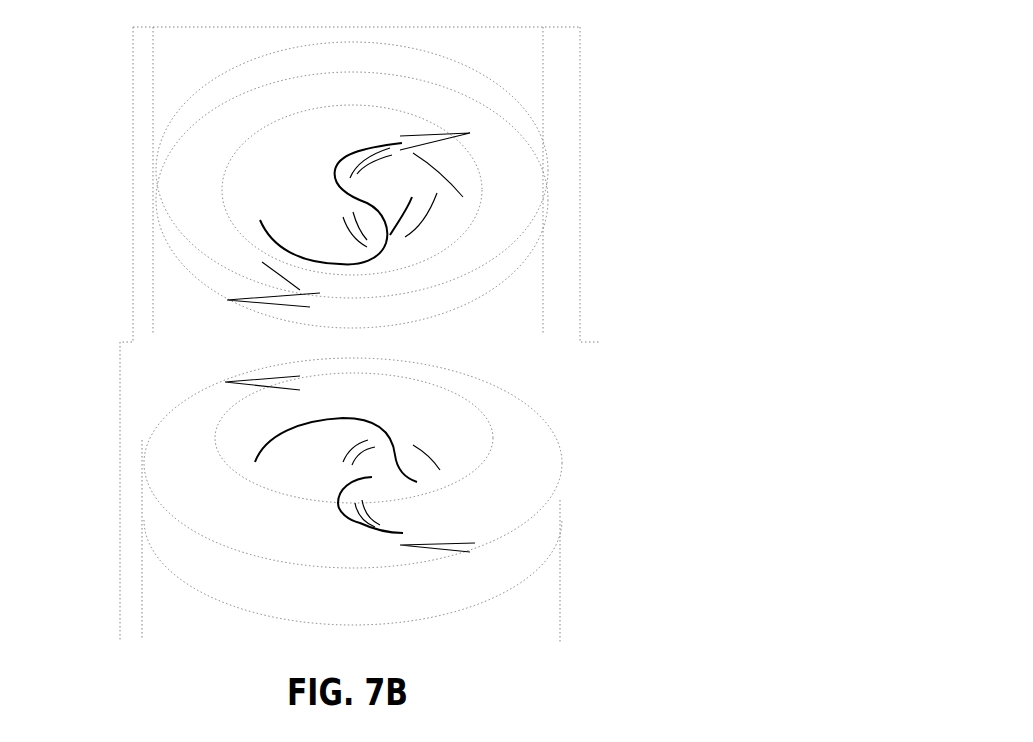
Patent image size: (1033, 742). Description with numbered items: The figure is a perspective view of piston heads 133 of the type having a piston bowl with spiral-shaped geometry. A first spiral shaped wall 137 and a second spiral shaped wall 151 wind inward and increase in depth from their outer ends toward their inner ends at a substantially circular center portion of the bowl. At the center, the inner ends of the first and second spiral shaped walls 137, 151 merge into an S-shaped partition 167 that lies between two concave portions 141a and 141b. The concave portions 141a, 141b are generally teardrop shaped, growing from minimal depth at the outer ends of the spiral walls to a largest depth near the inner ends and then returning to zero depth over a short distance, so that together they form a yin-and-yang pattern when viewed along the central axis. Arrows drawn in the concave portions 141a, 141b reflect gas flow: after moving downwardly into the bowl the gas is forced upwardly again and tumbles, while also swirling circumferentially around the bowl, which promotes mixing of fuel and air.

The mixing element 133 is at (515, 400).
The first spiral shaped wall 137 is at (467, 452).
The concave portion 141a is at (413, 503).
The concave portion 141b is at (306, 481).
The second spiral shaped wall 151 is at (238, 492).
The S-shaped partition 167 is at (287, 432).